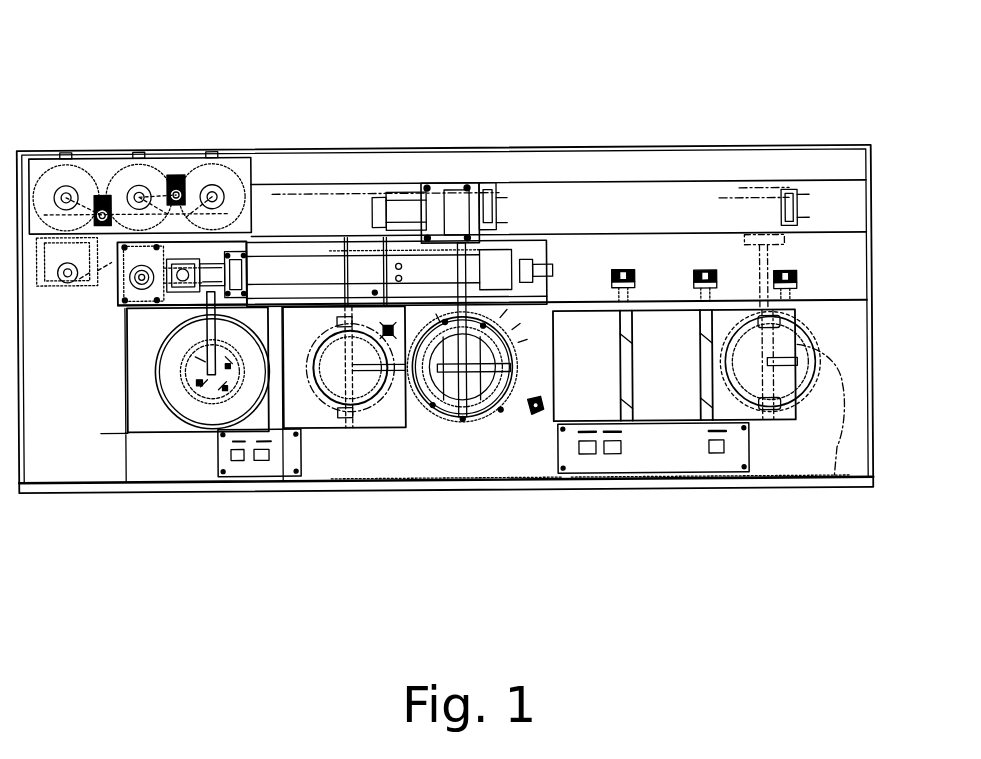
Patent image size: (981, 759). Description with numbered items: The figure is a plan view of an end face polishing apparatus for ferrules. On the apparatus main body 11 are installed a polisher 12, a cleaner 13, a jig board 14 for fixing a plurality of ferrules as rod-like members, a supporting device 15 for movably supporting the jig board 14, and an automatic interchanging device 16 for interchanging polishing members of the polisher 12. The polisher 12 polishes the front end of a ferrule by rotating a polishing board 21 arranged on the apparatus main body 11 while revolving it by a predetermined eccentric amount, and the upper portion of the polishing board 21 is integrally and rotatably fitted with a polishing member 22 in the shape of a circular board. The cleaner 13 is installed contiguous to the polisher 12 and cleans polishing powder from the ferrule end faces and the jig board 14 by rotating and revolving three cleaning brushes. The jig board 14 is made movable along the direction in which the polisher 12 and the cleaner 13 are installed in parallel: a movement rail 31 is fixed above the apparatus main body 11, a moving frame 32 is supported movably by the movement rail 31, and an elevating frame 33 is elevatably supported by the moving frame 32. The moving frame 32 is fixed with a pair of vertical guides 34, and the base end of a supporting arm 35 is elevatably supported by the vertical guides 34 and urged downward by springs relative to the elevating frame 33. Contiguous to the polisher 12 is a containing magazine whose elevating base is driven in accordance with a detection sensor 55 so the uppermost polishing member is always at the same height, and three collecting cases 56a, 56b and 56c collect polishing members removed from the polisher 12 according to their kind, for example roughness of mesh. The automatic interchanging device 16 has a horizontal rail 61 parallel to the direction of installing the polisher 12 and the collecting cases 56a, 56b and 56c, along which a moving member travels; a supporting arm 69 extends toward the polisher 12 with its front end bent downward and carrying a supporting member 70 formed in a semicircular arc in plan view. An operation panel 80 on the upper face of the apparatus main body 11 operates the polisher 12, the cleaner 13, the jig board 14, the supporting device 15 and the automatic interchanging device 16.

The apparatus main body 11 is at (363, 172).
The polisher 12 is at (329, 406).
The cleaner 13 is at (170, 406).
The jig board 14 is at (211, 373).
The supporting device 15 is at (213, 232).
The automatic interchanging device 16 is at (473, 170).
The polishing board 21 is at (337, 373).
The polishing member 22 is at (316, 388).
The movement rail 31 is at (320, 272).
The moving frame 32 is at (202, 240).
The elevating frame 33 is at (240, 232).
The vertical guides 34 is at (215, 232).
The supporting arm 35 is at (208, 330).
The detection sensor 55 is at (532, 414).
The collecting case 56a is at (585, 335).
The collecting case 56b is at (667, 342).
The collecting case 56c is at (735, 322).
The horizontal rail 61 is at (543, 200).
The supporting arm 69 is at (458, 265).
The supporting member 70 is at (480, 410).
The operation panel 80 is at (672, 445).